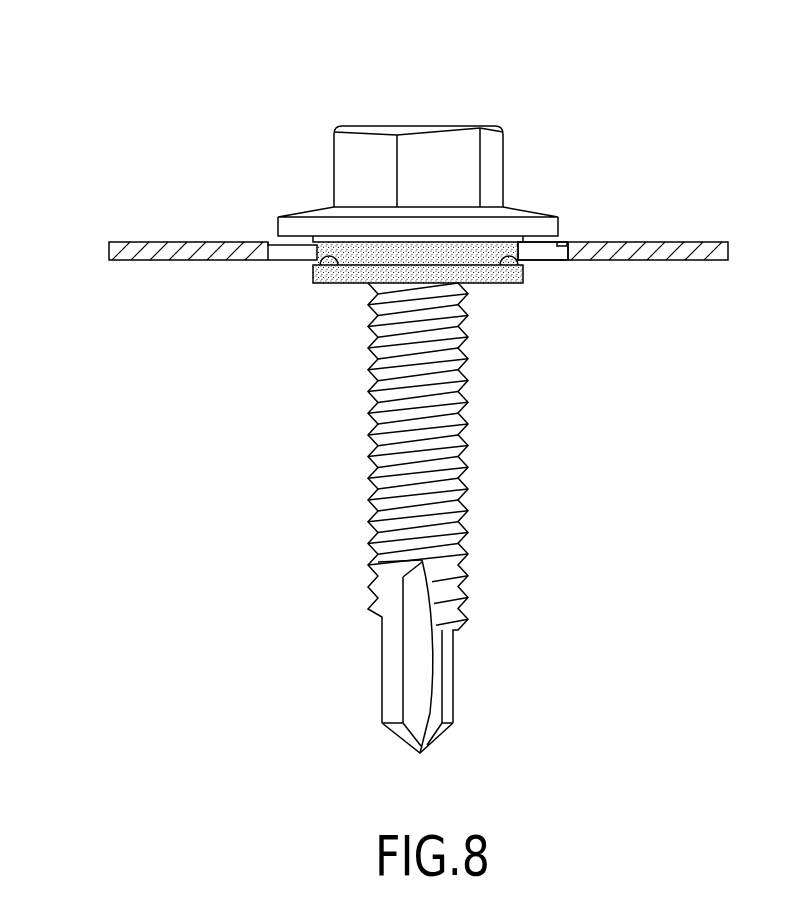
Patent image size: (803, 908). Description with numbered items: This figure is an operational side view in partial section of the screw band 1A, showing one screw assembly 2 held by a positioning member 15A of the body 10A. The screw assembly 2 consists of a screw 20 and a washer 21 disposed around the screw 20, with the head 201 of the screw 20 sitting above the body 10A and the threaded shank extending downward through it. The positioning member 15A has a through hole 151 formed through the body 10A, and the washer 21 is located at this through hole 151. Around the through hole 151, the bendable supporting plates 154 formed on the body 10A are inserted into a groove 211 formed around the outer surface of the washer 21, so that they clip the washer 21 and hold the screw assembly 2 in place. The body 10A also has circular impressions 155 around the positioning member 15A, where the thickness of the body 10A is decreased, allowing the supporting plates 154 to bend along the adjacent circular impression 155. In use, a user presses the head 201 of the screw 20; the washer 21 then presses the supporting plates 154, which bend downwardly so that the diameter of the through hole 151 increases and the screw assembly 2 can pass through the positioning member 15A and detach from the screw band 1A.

The screw band 1A is at (195, 213).
The body 10A is at (138, 238).
The screw assembly 2 is at (378, 98).
The screw 20 is at (522, 203).
The head 201 is at (427, 147).
The positioning member 15A is at (564, 222).
The circular impression 155 is at (564, 243).
The supporting plate 154 is at (538, 252).
The through hole 151 is at (517, 250).
The washer 21 is at (343, 283).
The groove 211 is at (318, 260).